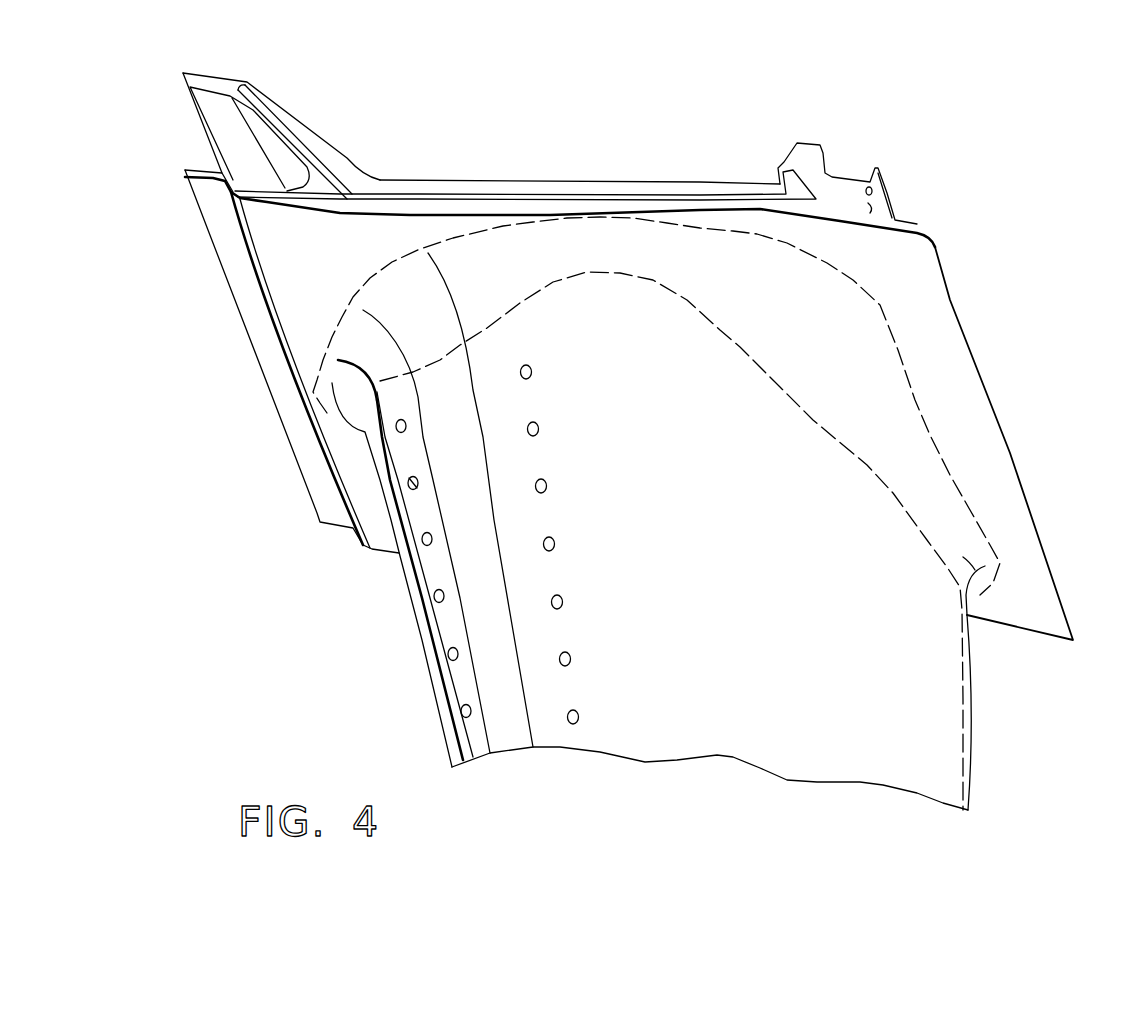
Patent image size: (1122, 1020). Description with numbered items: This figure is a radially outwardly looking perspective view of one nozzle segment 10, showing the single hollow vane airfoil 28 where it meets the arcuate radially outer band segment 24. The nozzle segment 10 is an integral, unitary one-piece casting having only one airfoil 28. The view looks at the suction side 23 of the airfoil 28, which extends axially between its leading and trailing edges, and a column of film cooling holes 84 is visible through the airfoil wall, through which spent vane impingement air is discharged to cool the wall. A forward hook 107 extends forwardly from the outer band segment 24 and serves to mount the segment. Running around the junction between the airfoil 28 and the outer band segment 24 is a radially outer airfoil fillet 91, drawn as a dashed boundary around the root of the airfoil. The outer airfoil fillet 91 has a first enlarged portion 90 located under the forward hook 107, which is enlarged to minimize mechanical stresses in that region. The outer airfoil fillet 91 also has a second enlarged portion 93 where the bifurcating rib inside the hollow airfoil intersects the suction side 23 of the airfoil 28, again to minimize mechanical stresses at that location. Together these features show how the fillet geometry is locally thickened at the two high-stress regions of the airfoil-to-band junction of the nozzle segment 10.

The nozzle segment 10 is at (628, 441).
The suction side 23 is at (712, 412).
The radially outer band segment 24 is at (897, 250).
The single hollow vane airfoil 28 is at (777, 491).
The film cooling holes 84 is at (410, 477).
The first enlarged portion 90 is at (408, 320).
The radially outer airfoil fillet 91 is at (587, 240).
The second enlarged portion 93 is at (803, 315).
The forward hook 107 is at (238, 122).